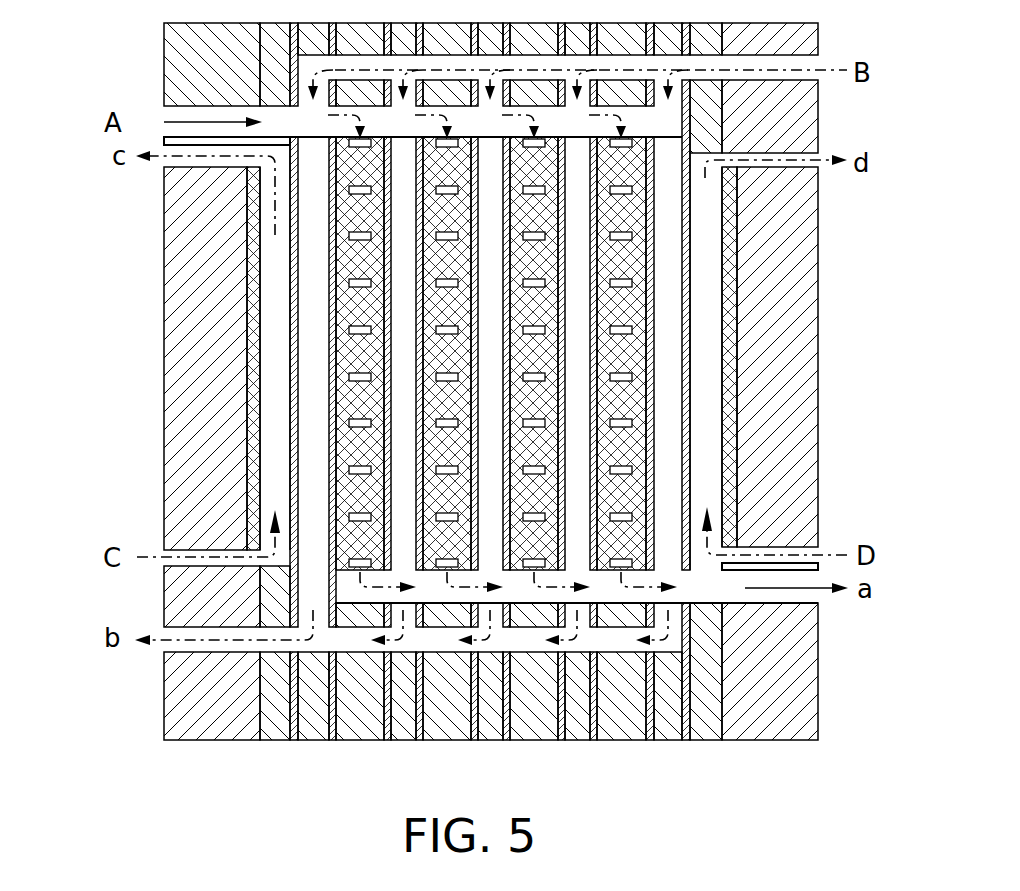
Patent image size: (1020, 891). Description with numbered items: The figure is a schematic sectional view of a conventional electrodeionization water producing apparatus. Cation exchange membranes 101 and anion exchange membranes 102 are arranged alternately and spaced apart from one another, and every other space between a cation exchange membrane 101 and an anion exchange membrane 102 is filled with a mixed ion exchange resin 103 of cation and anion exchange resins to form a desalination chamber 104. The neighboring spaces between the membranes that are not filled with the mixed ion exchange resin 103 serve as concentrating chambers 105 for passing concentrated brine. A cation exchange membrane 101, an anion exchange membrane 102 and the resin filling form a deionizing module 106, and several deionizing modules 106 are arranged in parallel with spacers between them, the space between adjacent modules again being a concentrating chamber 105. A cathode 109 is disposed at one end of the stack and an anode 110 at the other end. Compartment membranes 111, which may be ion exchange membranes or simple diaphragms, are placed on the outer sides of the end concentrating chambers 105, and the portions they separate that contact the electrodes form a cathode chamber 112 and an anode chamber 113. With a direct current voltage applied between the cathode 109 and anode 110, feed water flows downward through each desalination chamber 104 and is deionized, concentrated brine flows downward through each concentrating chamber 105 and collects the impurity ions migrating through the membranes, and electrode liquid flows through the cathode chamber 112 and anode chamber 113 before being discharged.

The cation exchange membrane 101 is at (335, 298).
The anion exchange membrane 102 is at (345, 377).
The mixed ion exchange resin 103 is at (335, 186).
The desalination chamber 104 is at (335, 423).
The concentrating chamber 105 is at (312, 596).
The deionizing module 106 is at (335, 249).
The cathode 109 is at (230, 473).
The anode 110 is at (737, 447).
The compartment membrane 111 is at (290, 492).
The cathode chamber 112 is at (272, 362).
The anode chamber 113 is at (705, 378).